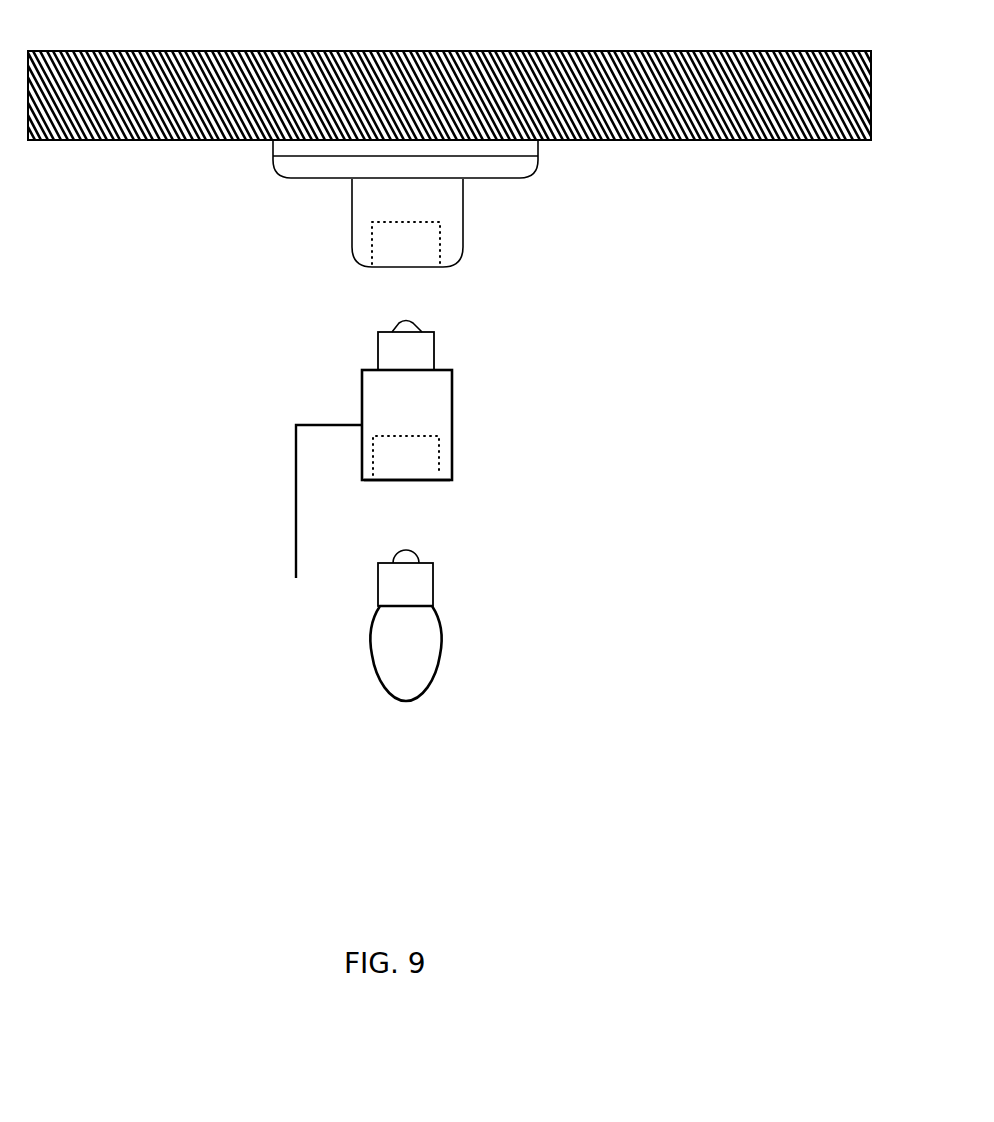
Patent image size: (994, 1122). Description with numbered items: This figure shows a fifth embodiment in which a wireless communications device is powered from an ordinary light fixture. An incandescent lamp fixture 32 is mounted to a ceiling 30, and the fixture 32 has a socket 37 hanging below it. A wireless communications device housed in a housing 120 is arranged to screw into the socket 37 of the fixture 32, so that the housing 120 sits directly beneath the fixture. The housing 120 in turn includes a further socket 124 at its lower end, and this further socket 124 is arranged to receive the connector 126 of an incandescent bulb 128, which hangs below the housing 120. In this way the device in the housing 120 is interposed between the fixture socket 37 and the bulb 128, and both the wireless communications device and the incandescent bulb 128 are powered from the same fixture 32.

The ceiling 30 is at (700, 145).
The incandescent lamp fixture 32 is at (539, 157).
The socket 37 is at (407, 267).
The housing 120 is at (479, 450).
The further socket 124 is at (405, 481).
The connector 126 is at (434, 585).
The incandescent bulb 128 is at (440, 646).